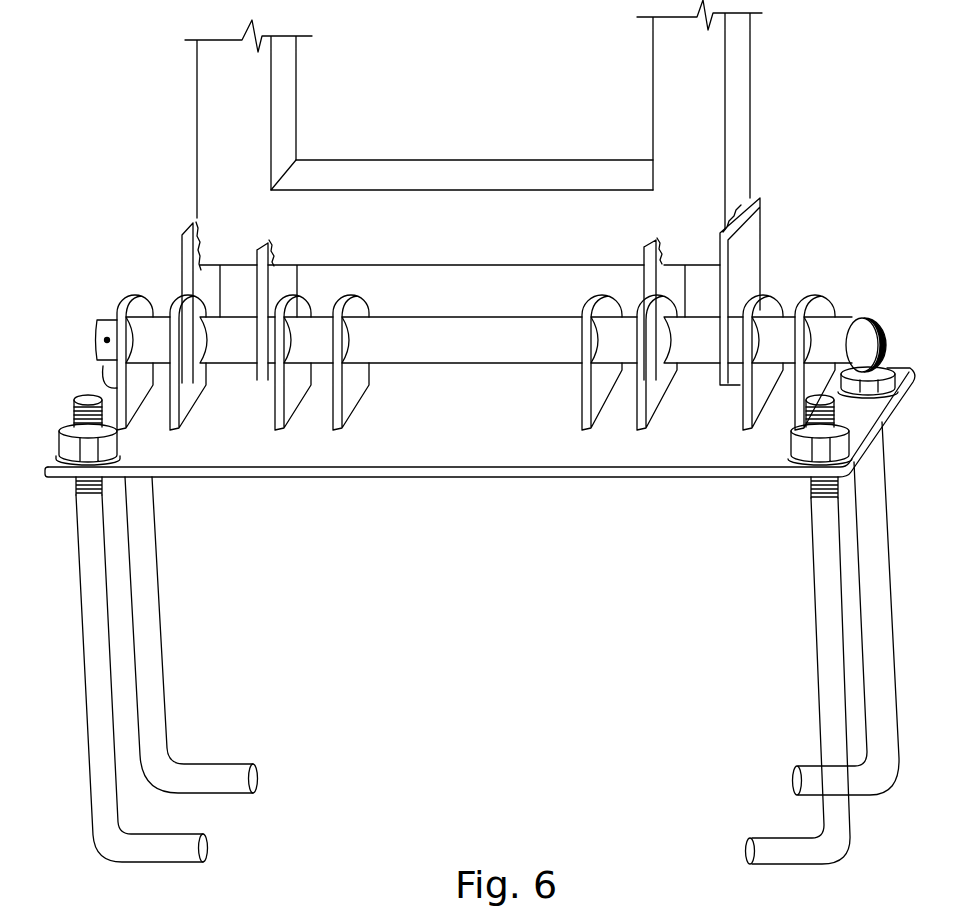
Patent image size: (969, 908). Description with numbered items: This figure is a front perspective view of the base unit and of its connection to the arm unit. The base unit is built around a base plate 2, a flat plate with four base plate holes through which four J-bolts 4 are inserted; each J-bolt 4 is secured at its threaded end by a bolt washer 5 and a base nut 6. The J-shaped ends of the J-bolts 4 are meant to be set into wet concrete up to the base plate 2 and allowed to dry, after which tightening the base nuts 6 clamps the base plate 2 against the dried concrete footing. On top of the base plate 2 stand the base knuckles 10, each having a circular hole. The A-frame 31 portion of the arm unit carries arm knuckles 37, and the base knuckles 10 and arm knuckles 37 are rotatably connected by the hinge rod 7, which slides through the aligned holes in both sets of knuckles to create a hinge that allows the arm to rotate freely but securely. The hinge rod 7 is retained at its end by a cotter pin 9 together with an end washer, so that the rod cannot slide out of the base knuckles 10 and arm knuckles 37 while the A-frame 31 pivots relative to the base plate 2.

The base plate 2 is at (517, 455).
The J-bolt 4 is at (827, 670).
The bolt washer 5 is at (55, 452).
The base nut 6 is at (63, 423).
The hinge rod 7 is at (107, 318).
The cotter pin 9 is at (104, 339).
The base knuckle 10 is at (775, 300).
The A-frame 31 is at (687, 108).
The arm knuckle 37 is at (745, 267).